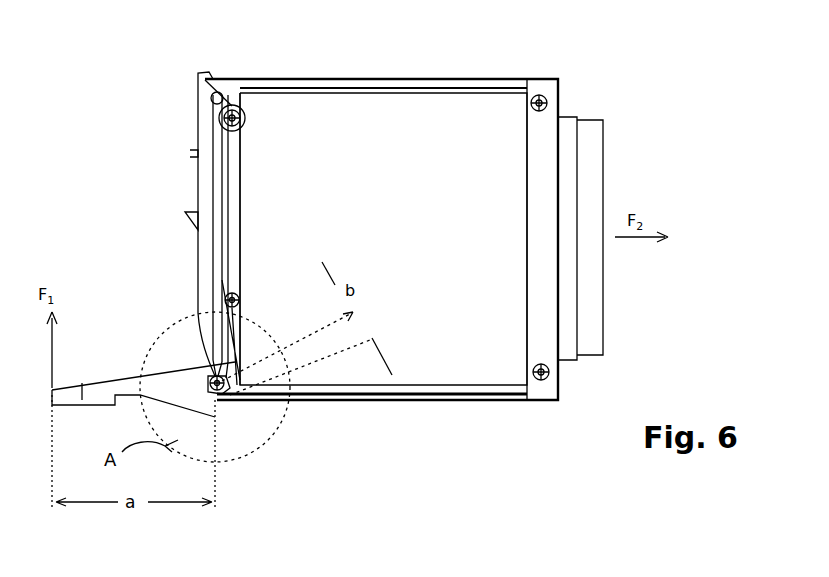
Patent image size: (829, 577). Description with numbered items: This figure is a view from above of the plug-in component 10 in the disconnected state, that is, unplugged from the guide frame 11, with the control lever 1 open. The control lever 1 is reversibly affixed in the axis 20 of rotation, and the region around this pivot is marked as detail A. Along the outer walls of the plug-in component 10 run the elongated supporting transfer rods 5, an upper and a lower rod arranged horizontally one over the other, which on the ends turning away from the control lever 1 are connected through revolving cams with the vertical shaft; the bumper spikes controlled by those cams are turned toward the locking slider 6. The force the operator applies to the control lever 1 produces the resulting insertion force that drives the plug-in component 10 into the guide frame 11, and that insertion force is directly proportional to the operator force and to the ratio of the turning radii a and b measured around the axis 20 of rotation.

The control lever 1 is at (84, 382).
The supporting transfer rod 5 is at (200, 132).
The locking slider 6 is at (197, 219).
The plug-in component 10 is at (400, 62).
The guide frame 11 is at (420, 400).
The axis of rotation 20 is at (205, 390).